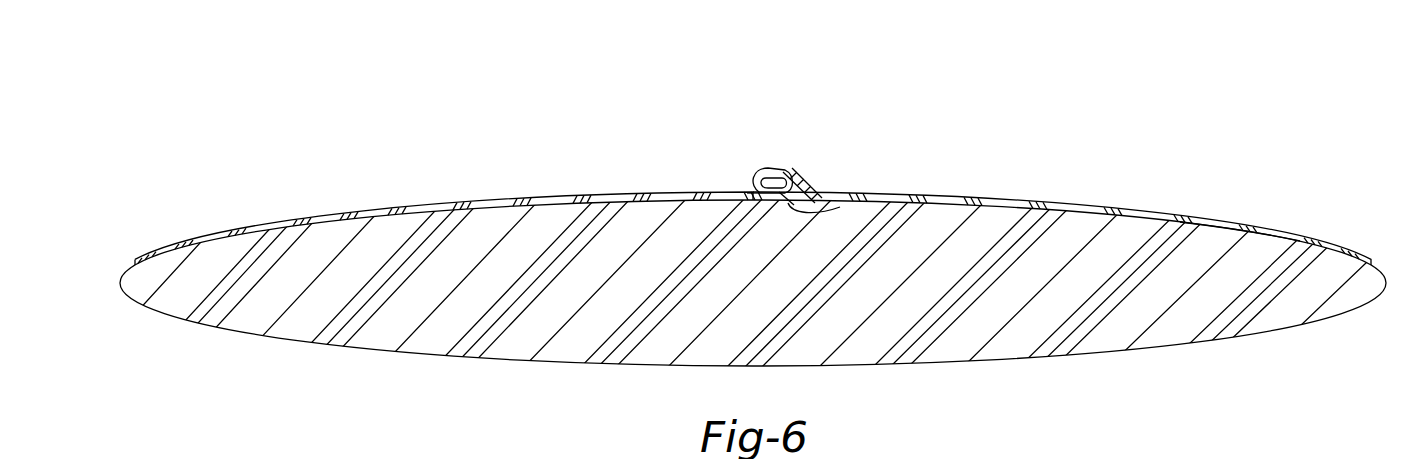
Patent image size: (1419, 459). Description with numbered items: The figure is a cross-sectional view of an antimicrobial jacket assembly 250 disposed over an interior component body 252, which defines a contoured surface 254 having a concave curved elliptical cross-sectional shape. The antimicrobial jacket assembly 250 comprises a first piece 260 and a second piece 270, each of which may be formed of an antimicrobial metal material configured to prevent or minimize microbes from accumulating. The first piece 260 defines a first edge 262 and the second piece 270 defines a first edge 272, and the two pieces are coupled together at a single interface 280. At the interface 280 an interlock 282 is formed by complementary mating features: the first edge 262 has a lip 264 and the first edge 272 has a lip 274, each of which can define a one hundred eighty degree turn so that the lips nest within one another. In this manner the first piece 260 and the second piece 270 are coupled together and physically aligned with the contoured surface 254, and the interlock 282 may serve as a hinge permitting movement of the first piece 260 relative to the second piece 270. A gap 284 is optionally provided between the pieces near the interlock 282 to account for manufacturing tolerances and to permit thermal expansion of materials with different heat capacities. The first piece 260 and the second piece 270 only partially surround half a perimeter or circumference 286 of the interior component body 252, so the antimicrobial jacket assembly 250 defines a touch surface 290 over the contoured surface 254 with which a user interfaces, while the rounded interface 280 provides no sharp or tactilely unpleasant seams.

The antimicrobial jacket assembly 250 is at (319, 133).
The interior component body 252 is at (1250, 257).
The contoured surface 254 is at (1202, 227).
The first piece 260 is at (480, 200).
The first edge 262 is at (785, 180).
The lip 264 is at (770, 180).
The second piece 270 is at (1035, 208).
The first edge 272 is at (751, 183).
The lip 274 is at (747, 193).
The interface 280 is at (712, 136).
The interlock 282 is at (827, 207).
The gap 284 is at (795, 200).
The perimeter or circumference 286 is at (1277, 330).
The touch surface 290 is at (578, 196).